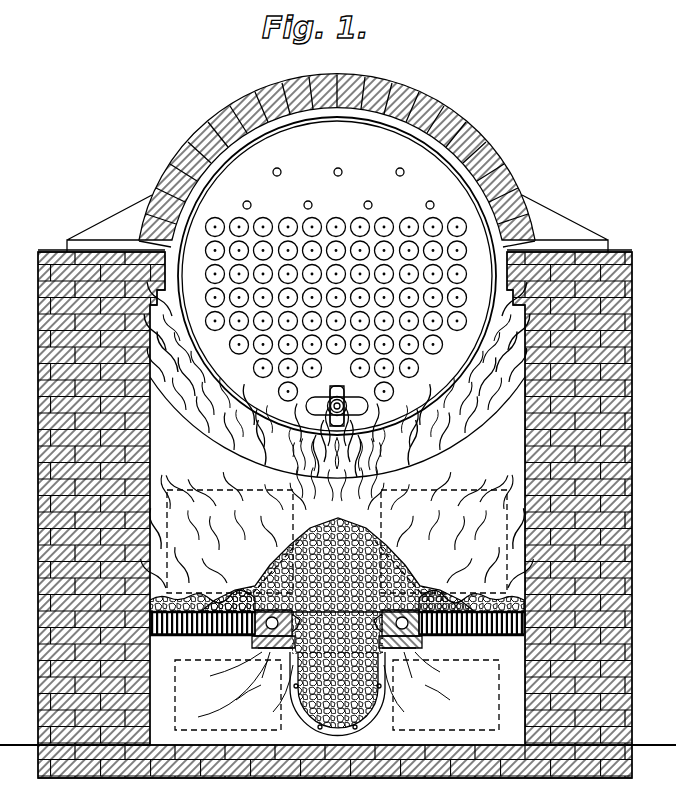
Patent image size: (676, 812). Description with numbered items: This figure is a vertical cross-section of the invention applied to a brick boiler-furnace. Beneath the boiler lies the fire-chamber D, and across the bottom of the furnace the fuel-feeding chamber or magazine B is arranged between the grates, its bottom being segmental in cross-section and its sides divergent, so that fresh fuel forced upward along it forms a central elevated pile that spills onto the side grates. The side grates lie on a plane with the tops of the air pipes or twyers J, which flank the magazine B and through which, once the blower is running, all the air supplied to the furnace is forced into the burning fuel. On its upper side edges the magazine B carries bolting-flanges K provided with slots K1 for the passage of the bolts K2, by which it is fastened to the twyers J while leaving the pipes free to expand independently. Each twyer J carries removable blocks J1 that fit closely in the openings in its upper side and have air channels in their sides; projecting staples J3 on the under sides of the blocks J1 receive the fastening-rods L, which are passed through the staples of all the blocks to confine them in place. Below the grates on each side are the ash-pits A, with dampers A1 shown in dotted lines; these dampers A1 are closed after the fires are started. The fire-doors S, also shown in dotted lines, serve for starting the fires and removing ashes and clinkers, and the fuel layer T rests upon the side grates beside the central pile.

The ash-pit A is at (255, 636).
The damper A1 is at (338, 697).
The fuel-feeding magazine B is at (318, 723).
The fire-chamber D is at (190, 492).
The air pipe or twyer J is at (270, 648).
The block J1 is at (255, 593).
The staple J3 is at (333, 673).
The bolting-flange K is at (341, 669).
The slot K1 is at (224, 694).
The bolt K2 is at (338, 694).
The fastening-rod L is at (231, 690).
The fire-door S is at (215, 560).
The fuel bed T is at (200, 601).